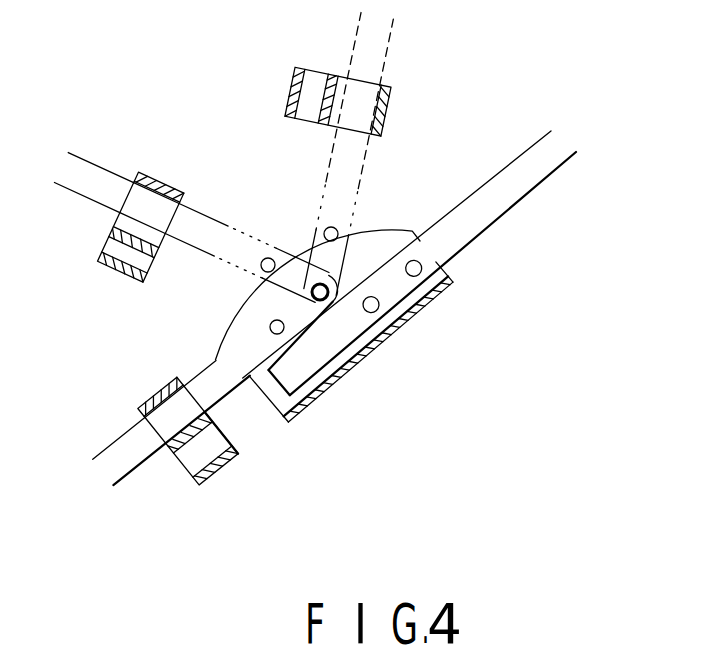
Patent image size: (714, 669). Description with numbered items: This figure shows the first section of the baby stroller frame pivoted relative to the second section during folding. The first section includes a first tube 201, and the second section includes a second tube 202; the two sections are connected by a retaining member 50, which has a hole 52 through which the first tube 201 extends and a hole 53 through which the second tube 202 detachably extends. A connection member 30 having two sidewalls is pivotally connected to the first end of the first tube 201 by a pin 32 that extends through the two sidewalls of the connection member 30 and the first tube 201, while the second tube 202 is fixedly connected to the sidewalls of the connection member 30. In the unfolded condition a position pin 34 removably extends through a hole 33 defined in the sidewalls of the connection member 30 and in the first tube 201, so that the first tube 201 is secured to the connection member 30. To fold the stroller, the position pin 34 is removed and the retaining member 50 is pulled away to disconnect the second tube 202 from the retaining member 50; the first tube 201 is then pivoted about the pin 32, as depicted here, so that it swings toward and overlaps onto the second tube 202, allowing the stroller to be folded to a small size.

The first tube 201 is at (88, 167).
The second tube 202 is at (488, 187).
The connection member 30 is at (265, 428).
The pin 32 is at (315, 286).
The hole 33 is at (268, 327).
The position pin 34 is at (270, 321).
The retaining member 50 is at (222, 468).
The hole 52 is at (163, 397).
The hole 53 is at (186, 456).